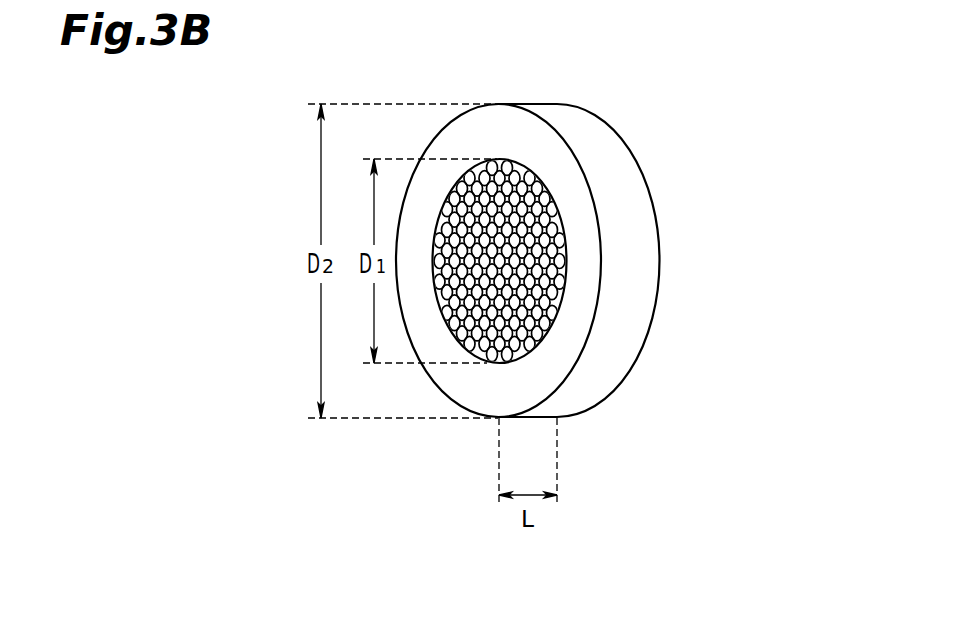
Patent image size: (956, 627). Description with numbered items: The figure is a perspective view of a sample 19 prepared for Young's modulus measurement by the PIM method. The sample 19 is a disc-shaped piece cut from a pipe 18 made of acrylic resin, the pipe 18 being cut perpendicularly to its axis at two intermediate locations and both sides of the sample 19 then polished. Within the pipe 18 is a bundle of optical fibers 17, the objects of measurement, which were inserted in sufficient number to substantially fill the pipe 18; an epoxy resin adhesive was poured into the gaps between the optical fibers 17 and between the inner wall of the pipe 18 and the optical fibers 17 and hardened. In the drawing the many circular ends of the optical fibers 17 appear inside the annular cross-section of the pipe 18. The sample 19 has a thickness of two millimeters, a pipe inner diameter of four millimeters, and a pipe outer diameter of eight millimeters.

The optical fiber 17 is at (495, 334).
The pipe 18 is at (602, 383).
The sample 19 is at (528, 346).